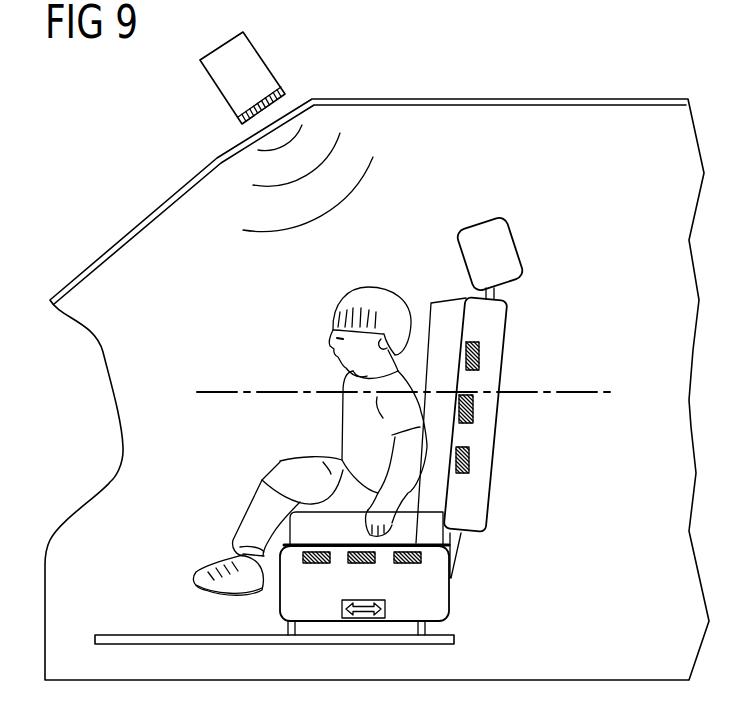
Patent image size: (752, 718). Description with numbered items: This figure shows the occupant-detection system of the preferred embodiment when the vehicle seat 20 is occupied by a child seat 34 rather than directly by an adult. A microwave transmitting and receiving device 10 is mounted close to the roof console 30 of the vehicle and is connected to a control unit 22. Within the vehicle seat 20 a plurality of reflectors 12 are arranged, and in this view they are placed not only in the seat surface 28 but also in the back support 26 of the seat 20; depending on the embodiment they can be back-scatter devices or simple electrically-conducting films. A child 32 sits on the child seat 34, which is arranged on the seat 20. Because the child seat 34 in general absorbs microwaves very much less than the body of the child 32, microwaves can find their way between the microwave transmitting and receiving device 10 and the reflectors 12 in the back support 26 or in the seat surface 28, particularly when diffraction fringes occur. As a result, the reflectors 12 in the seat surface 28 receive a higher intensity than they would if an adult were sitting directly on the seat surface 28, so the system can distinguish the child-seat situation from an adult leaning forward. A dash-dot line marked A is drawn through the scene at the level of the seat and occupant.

The microwave transmitting and receiving device 10 is at (288, 96).
The reflectors 12 is at (480, 356).
The vehicle seat 20 is at (334, 430).
The control unit 22 is at (257, 64).
The back support 26 is at (501, 323).
The seat surface 28 is at (438, 578).
The roof console 30 is at (465, 98).
The child 32 is at (342, 433).
The child seat 34 is at (448, 312).
The axis A is at (217, 390).